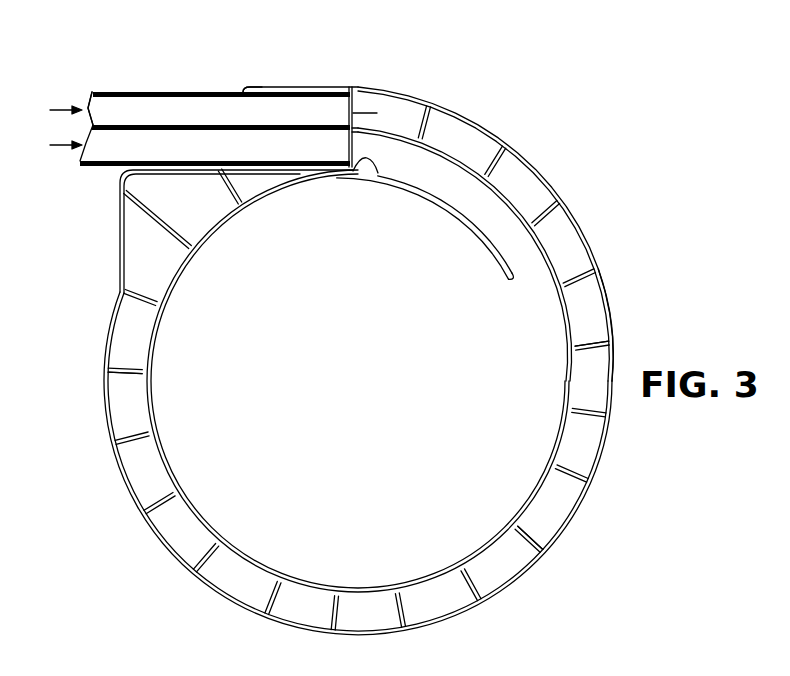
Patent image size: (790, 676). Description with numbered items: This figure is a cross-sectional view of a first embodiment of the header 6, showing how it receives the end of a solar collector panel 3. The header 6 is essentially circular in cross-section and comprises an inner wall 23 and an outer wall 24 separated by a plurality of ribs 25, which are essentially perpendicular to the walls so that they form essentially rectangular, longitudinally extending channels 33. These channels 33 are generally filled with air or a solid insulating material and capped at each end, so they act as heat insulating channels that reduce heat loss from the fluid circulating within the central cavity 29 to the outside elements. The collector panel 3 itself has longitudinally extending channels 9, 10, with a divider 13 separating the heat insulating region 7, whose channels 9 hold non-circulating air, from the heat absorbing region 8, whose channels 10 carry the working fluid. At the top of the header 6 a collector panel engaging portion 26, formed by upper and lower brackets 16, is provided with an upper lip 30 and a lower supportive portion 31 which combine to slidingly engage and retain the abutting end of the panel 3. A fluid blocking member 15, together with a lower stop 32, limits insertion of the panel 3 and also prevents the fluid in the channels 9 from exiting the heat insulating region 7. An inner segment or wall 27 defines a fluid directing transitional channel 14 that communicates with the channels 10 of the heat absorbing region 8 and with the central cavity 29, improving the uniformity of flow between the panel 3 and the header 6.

The solar collector panel 3 is at (155, 92).
The header 6 is at (530, 166).
The heat insulating region 7 is at (56, 113).
The heat absorbing region 8 is at (56, 148).
The channels 9 is at (177, 107).
The channels 10 is at (200, 147).
The divider 13 is at (125, 130).
The transitional channel 14 is at (428, 170).
The fluid blocking member 15 is at (377, 113).
The brackets 16 is at (287, 84).
The inner wall 23 is at (563, 310).
The outer wall 24 is at (604, 283).
The ribs 25 is at (125, 363).
The collector panel engaging portion 26 is at (314, 84).
The inner segment 27 is at (478, 228).
The central cavity 29 is at (220, 505).
The upper lip 30 is at (262, 88).
The lower supportive portion 31 is at (278, 172).
The lower stop 32 is at (375, 163).
The channels 33 is at (420, 121).